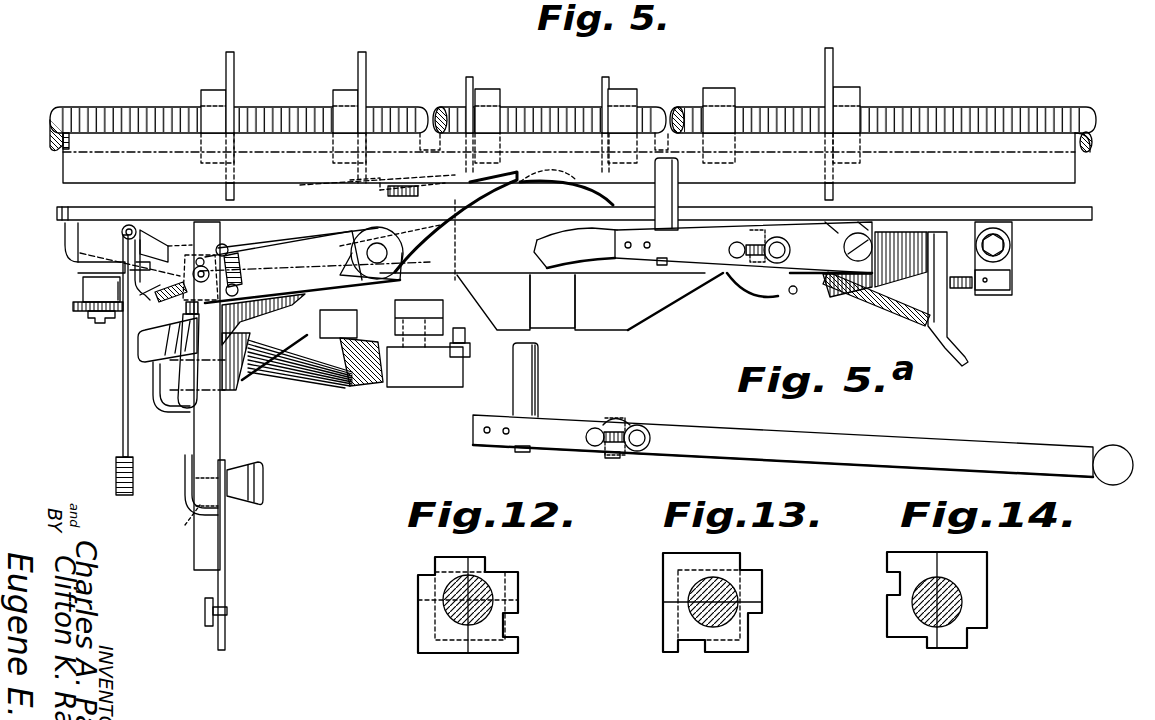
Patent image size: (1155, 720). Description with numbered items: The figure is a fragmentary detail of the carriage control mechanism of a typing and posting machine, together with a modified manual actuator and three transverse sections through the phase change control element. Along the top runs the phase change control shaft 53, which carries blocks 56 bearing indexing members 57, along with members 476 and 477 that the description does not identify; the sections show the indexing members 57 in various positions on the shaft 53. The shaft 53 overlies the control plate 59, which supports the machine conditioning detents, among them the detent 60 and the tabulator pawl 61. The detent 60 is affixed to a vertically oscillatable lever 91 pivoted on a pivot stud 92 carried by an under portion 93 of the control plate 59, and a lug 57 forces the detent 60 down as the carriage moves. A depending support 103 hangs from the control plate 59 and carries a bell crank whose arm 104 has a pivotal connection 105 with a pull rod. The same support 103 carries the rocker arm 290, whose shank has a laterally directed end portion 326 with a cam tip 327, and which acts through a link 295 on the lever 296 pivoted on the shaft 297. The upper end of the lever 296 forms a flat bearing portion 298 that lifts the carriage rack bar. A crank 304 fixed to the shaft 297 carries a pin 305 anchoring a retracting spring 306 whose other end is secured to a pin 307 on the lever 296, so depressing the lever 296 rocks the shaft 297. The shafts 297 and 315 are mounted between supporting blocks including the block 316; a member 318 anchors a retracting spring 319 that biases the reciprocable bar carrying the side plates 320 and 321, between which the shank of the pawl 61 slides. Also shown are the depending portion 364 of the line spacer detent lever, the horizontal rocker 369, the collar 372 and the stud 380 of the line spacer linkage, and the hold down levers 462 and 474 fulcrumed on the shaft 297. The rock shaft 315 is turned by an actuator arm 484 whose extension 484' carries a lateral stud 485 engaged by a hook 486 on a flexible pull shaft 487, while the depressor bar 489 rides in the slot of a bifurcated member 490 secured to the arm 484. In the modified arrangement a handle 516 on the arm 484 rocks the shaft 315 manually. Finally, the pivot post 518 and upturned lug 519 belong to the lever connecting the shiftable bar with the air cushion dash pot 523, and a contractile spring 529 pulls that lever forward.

In FIG. 5, the phase change control shaft 53 is at (925, 108).
In FIG. 12, the phase change control shaft 53 is at (482, 598).
In FIG. 13, the phase change control shaft 53 is at (728, 590).
In FIG. 14, the phase change control shaft 53 is at (920, 605).
In FIG. 5, the block 56 is at (488, 89).
In FIG. 5, the indexing member 57 is at (469, 77).
In FIG. 12, the indexing member 57 is at (438, 562).
In FIG. 13, the indexing member 57 is at (664, 580).
In FIG. 14, the indexing member 57 is at (985, 605).
In FIG. 5, the control plate 59 is at (915, 207).
In FIG. 5, the detent 60 is at (522, 215).
In FIG. 5, the tabulator pawl 61 is at (560, 312).
In FIG. 5, the vertically oscillatable lever 91 is at (835, 280).
In FIG. 5, the pivot stud 92 is at (1012, 240).
In FIG. 5, the under portion of the control plate 93 is at (1012, 270).
In FIG. 5, the depending support 103 is at (220, 433).
In FIG. 5, the bell crank lever arm 104 is at (226, 575).
In FIG. 5, the pivotal connection 105 is at (205, 618).
In FIG. 5, the rocker arm 290 is at (183, 480).
In FIG. 5, the link 295 is at (172, 385).
In FIG. 5, the lever 296 is at (300, 244).
In FIG. 5, the shaft 297 is at (398, 258).
In FIG. 5, the flat bearing portion 298 is at (505, 178).
In FIG. 5, the crank 304 is at (278, 238).
In FIG. 5, the pin 305 is at (213, 258).
In FIG. 5, the retracting spring 306 is at (240, 262).
In FIG. 5, the pin 307 is at (240, 312).
In FIG. 5, the rock shaft 315 is at (775, 263).
In FIG. 5A, the rock shaft 315 is at (640, 425).
In FIG. 5, the supporting block 316 is at (838, 224).
In FIG. 5, the anchorage member 318 is at (1000, 290).
In FIG. 5, the retracting spring 319 is at (950, 290).
In FIG. 5, the side plate 320 is at (503, 318).
In FIG. 5, the side plate 321 is at (605, 326).
In FIG. 5, the end portion 326 is at (190, 520).
In FIG. 5, the cam tip 327 is at (263, 480).
In FIG. 5, the depending portion 364 is at (362, 372).
In FIG. 5, the horizontal rocker 369 is at (463, 360).
In FIG. 5, the collar 372 is at (436, 390).
In FIG. 5, the upstanding stud 380 is at (388, 192).
In FIG. 5, the pull down lever 462 is at (142, 348).
In FIG. 5, the hold down lever 474 is at (240, 378).
In FIG. 5, the block 476 is at (203, 90).
In FIG. 5, the pin 477 is at (230, 52).
In FIG. 5, the actuator arm 484 is at (743, 267).
In FIG. 5A, the actuator arm 484 is at (808, 456).
In FIG. 5, the longitudinal extension 484' is at (395, 241).
In FIG. 5, the lateral stud 485 is at (130, 245).
In FIG. 5, the hook 486 is at (125, 242).
In FIG. 5, the flexible pull shaft 487 is at (123, 450).
In FIG. 5, the depressor bar 489 is at (777, 133).
In FIG. 5, the bifurcated member 490 is at (655, 193).
In FIG. 5A, the bifurcated member 490 is at (540, 385).
In FIG. 5A, the handle 516 is at (900, 442).
In FIG. 5, the pivot post 518 is at (100, 323).
In FIG. 5, the upturned lug 519 is at (142, 282).
In FIG. 5, the air cushion dash pot 523 is at (312, 382).
In FIG. 5, the contractile spring 529 is at (160, 300).